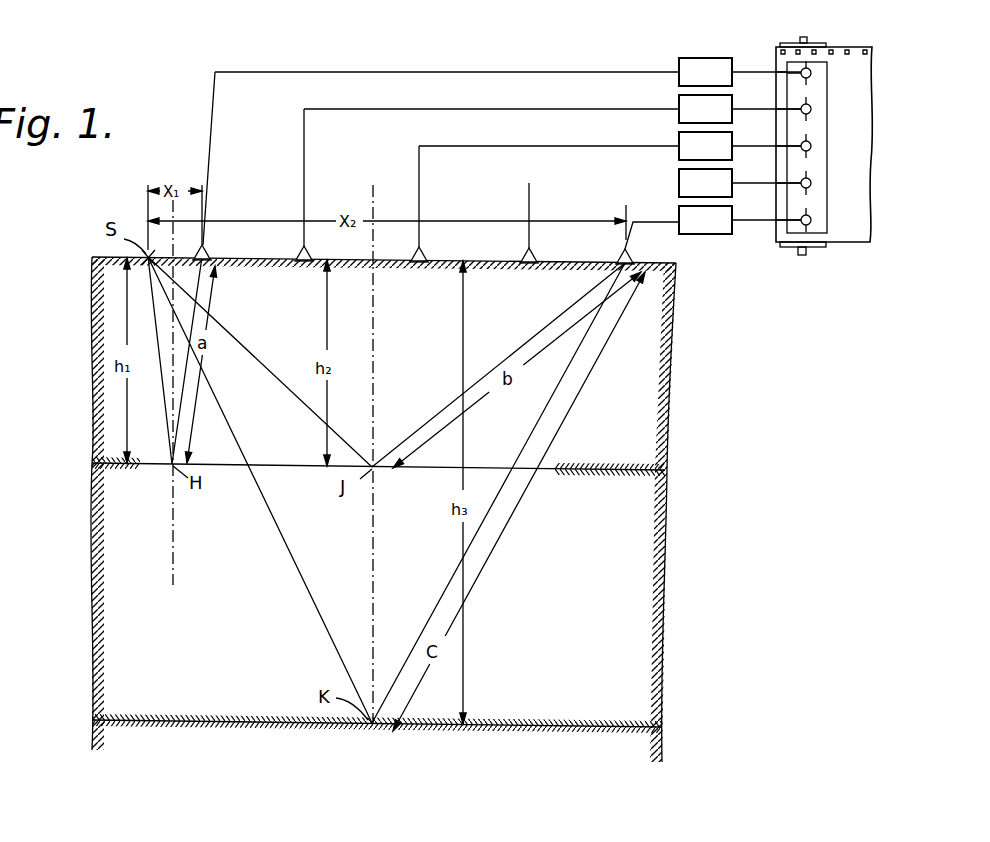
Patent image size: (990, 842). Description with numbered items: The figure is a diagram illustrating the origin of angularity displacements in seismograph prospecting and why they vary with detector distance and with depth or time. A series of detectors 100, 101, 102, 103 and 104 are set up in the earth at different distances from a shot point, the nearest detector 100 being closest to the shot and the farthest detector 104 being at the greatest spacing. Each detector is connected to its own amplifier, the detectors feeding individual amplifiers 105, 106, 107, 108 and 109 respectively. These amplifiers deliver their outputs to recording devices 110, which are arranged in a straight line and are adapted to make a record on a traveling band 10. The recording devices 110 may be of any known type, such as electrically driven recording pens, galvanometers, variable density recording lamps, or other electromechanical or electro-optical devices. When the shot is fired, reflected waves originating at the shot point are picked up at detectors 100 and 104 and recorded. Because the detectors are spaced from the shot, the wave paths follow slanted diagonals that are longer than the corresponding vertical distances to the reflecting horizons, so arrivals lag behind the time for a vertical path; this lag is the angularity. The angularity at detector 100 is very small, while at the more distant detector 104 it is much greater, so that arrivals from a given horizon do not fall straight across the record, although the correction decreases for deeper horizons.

The traveling band 10 is at (870, 241).
The detector 100 is at (206, 249).
The detector 101 is at (307, 250).
The detector 102 is at (422, 251).
The detector 103 is at (532, 252).
The detector 104 is at (628, 254).
The amplifier 105 is at (679, 70).
The amplifier 106 is at (679, 107).
The amplifier 107 is at (679, 144).
The amplifier 108 is at (679, 181).
The amplifier 109 is at (679, 218).
The recording devices 110 is at (812, 108).